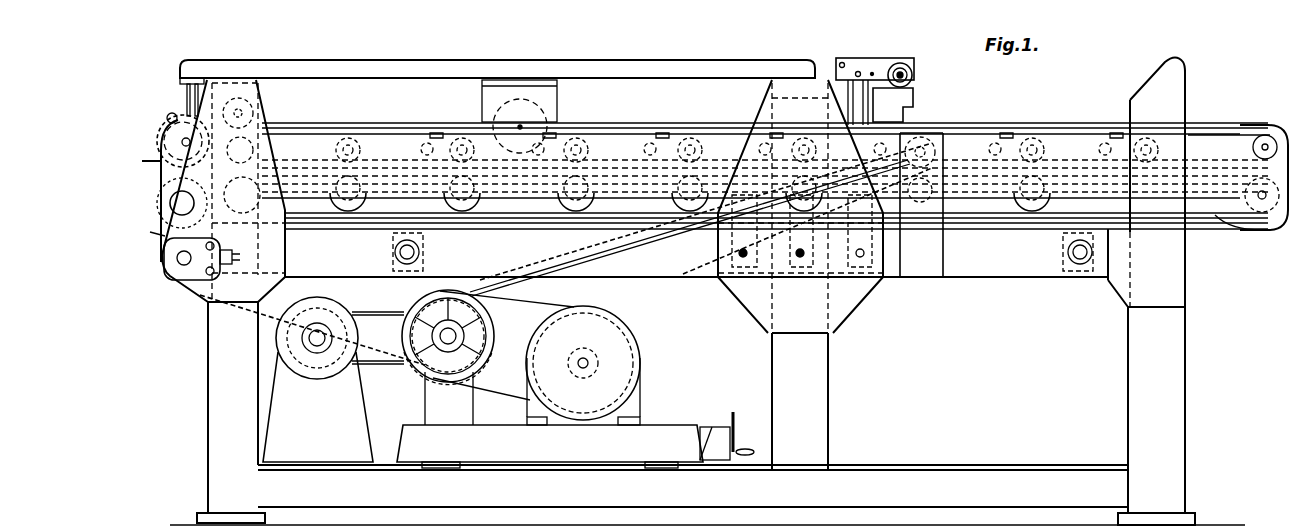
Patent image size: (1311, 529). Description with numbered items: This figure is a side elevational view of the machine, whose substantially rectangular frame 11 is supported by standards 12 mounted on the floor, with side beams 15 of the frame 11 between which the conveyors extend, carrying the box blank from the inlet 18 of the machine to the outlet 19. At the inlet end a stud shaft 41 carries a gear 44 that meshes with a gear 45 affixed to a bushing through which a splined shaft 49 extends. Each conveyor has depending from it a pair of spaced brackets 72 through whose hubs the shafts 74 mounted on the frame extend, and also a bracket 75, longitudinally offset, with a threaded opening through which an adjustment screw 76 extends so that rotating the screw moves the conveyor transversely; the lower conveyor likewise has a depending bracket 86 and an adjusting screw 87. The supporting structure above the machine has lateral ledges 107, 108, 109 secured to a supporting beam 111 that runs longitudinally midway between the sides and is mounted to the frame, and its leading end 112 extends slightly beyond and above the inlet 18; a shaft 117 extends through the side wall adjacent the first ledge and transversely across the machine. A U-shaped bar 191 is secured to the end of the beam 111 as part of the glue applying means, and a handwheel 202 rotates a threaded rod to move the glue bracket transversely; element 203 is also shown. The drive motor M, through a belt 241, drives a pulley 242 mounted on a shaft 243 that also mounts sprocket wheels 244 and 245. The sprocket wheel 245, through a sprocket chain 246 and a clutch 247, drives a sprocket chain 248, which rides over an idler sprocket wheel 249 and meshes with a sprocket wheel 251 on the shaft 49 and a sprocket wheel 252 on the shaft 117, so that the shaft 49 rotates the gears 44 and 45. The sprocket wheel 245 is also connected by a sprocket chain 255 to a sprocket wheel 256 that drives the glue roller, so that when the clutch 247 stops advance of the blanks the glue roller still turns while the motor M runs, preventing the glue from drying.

The frame 11 is at (957, 293).
The standards 12 is at (208, 383).
The side beams 15 is at (1018, 280).
The inlet 18 is at (162, 207).
The outlet 19 is at (1284, 142).
The stud shaft 41 is at (182, 137).
The gear 44 is at (172, 116).
The gear 45 is at (146, 237).
The shaft 49 is at (172, 257).
The brackets 72 is at (397, 208).
The shafts 74 is at (422, 251).
The bracket 75 is at (738, 237).
The adjustment screw 76 is at (743, 257).
The bracket 86 is at (810, 243).
The adjusting screw 87 is at (800, 257).
The lateral ledge 107 is at (180, 78).
The lateral ledge 108 is at (522, 82).
The lateral ledge 109 is at (828, 57).
The supporting beam 111 is at (650, 63).
The leading end 112 is at (143, 147).
The shaft 117 is at (239, 108).
The U-shaped bar 191 is at (860, 60).
The handwheel 202 is at (914, 80).
The block 203 is at (895, 104).
The belt 241 is at (503, 410).
The pulley 242 is at (478, 366).
The shaft 243 is at (430, 378).
The sprocket wheel 244 is at (484, 310).
The sprocket wheel 245 is at (452, 330).
The sprocket chain 246 is at (386, 313).
The clutch 247 is at (304, 380).
The sprocket chain 248 is at (268, 340).
The idler sprocket wheel 249 is at (175, 282).
The sprocket wheel 251 is at (200, 218).
The sprocket wheel 252 is at (258, 108).
The sprocket chain 255 is at (513, 280).
The sprocket wheel 256 is at (932, 146).
The drive motor M is at (620, 358).